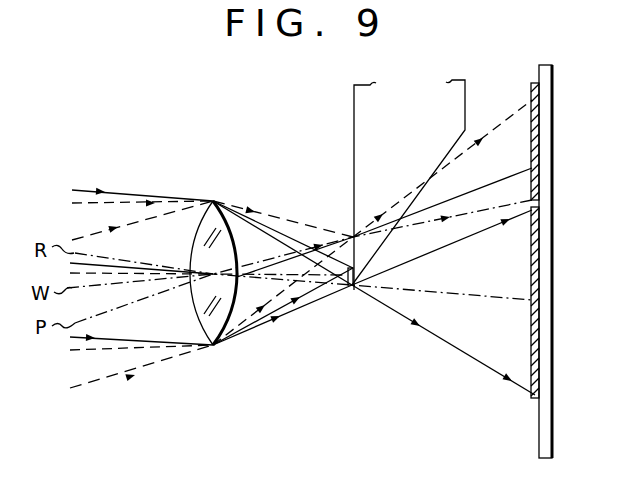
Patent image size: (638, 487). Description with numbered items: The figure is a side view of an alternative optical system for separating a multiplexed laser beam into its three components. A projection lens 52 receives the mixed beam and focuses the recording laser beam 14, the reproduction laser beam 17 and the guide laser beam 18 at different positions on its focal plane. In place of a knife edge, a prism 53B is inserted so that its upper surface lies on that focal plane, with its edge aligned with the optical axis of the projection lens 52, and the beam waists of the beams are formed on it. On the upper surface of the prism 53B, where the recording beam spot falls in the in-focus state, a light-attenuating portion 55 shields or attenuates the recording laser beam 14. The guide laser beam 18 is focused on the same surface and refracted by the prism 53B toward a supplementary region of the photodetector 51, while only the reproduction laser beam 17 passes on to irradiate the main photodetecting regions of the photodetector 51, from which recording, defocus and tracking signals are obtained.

The recording laser beam 14 is at (121, 351).
The reproduction laser beam 17 is at (78, 342).
The guide laser beam 18 is at (178, 354).
The photodetector 51 is at (554, 272).
The projection lens 52 is at (192, 243).
The prism 53B is at (354, 126).
The light-attenuating portion 55 is at (350, 290).